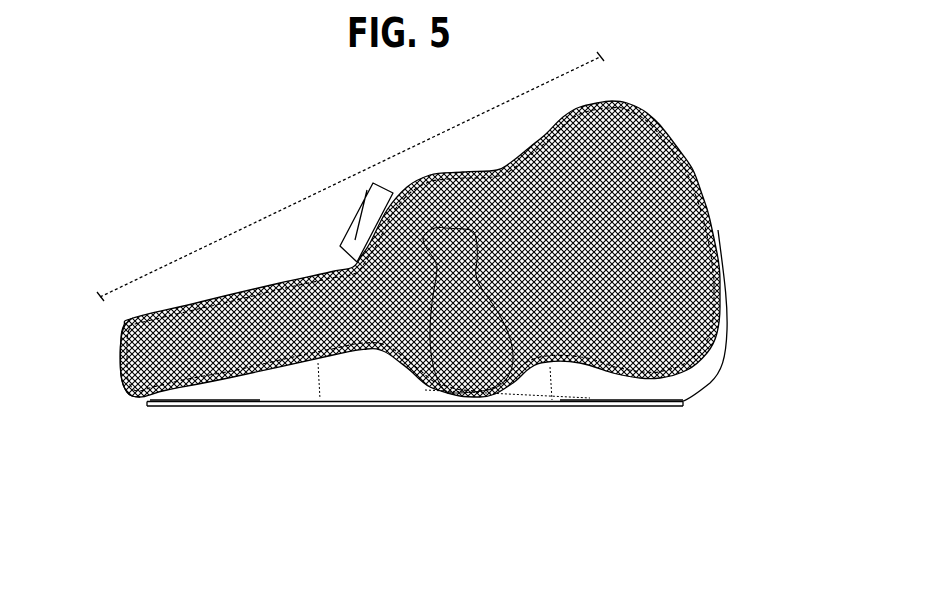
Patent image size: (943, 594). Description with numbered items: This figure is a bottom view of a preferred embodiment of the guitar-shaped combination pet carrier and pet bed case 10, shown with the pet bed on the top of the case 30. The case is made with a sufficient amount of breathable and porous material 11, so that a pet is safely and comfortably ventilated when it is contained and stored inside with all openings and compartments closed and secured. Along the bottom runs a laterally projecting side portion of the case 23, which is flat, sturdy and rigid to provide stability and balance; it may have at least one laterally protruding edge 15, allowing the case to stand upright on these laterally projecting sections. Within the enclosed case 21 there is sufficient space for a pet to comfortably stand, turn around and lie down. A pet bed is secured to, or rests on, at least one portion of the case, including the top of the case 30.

The combination pet carrier and pet bed case 10 is at (354, 176).
The breathable and porous material 11 is at (707, 207).
The enclosed case 21 is at (722, 275).
The top of the case 30 is at (117, 358).
The laterally protruding edge 15 is at (213, 408).
The laterally projecting side portion of the case 23 is at (343, 408).